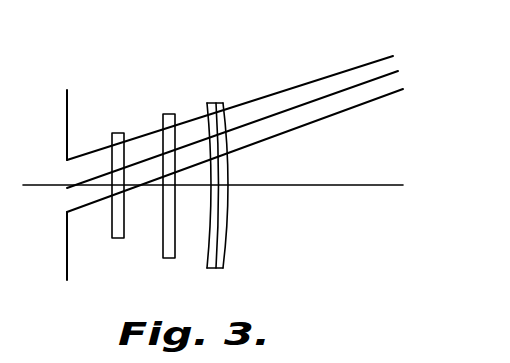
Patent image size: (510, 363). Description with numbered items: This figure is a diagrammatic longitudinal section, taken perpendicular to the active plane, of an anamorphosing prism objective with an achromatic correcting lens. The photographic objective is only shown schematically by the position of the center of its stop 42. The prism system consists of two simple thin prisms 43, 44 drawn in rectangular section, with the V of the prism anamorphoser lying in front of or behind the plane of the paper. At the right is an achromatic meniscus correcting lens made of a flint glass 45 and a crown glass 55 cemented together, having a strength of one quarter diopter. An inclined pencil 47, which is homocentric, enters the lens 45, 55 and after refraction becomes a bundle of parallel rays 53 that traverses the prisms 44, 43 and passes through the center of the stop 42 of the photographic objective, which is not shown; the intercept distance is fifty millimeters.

The center of the stop 42 is at (65, 189).
The prism 43 is at (118, 240).
The prism 44 is at (172, 260).
The flint glass 45 is at (210, 266).
The inclined pencil 47 is at (402, 94).
The bundle of parallel rays 53 is at (191, 143).
The crown glass 55 is at (224, 263).